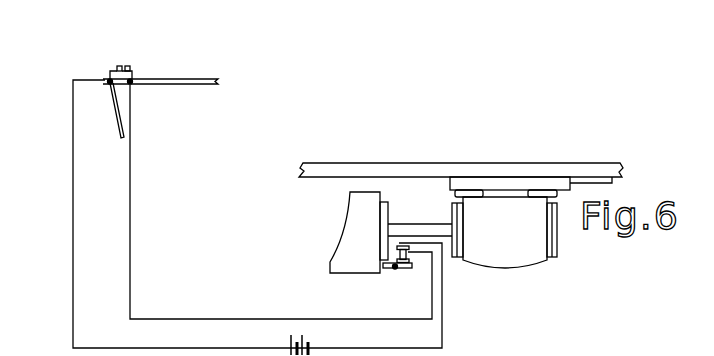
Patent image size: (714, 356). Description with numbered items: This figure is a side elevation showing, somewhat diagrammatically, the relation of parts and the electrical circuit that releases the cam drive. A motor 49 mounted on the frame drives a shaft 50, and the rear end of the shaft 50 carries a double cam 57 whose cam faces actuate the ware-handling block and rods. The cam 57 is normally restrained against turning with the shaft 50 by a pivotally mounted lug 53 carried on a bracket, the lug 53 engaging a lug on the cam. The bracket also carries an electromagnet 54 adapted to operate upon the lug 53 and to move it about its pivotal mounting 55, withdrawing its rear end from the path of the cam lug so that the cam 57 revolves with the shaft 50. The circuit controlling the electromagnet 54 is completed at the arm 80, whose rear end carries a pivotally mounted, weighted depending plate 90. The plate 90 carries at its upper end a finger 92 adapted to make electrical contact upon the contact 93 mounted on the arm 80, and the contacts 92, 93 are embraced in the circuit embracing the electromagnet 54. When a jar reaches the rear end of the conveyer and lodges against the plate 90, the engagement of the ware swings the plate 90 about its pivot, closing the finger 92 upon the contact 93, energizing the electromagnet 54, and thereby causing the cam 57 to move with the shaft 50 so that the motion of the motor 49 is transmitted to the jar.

The motor 49 is at (503, 247).
The shaft 50 is at (416, 233).
The pivotally mounted lug 53 is at (386, 269).
The electromagnet 54 is at (409, 262).
The pivotal mounting 55 is at (397, 270).
The double cam 57 is at (357, 240).
The arm 80 is at (184, 79).
The depending plate 90 is at (117, 120).
The finger 92 is at (119, 66).
The contact 93 is at (128, 66).